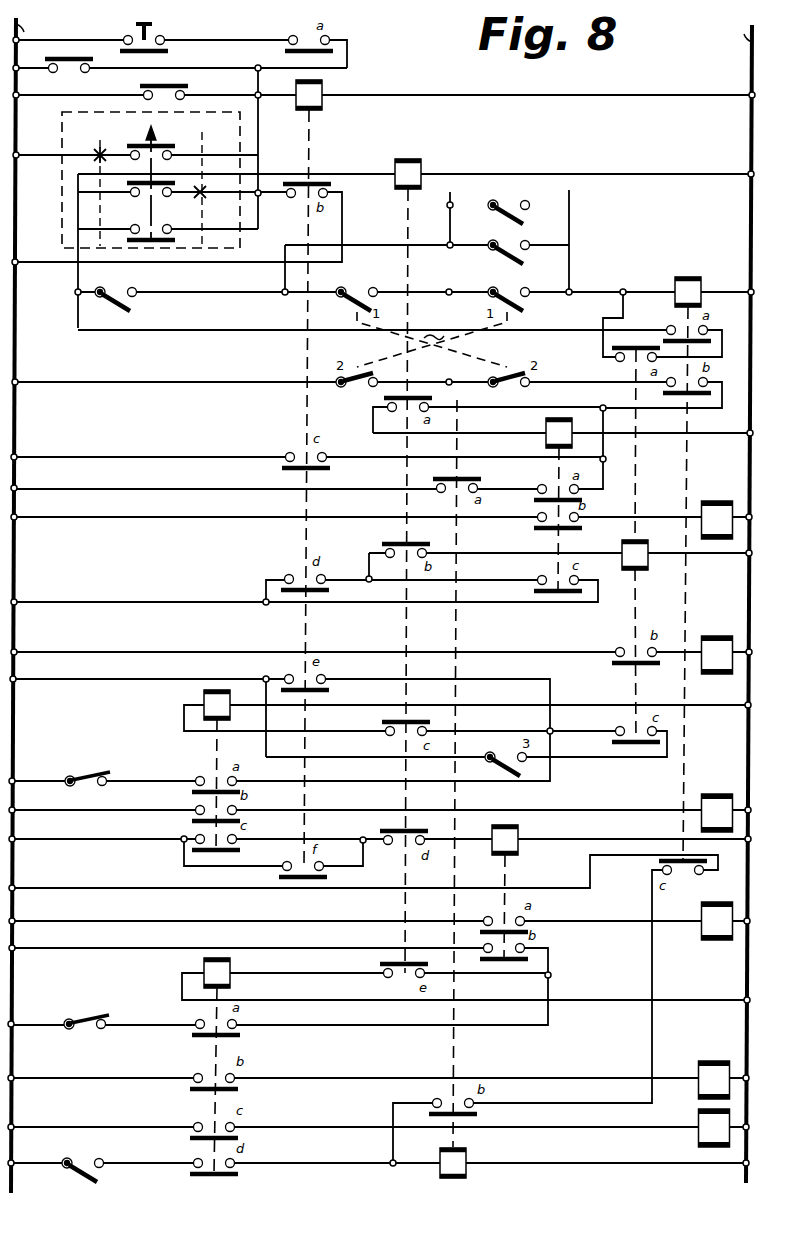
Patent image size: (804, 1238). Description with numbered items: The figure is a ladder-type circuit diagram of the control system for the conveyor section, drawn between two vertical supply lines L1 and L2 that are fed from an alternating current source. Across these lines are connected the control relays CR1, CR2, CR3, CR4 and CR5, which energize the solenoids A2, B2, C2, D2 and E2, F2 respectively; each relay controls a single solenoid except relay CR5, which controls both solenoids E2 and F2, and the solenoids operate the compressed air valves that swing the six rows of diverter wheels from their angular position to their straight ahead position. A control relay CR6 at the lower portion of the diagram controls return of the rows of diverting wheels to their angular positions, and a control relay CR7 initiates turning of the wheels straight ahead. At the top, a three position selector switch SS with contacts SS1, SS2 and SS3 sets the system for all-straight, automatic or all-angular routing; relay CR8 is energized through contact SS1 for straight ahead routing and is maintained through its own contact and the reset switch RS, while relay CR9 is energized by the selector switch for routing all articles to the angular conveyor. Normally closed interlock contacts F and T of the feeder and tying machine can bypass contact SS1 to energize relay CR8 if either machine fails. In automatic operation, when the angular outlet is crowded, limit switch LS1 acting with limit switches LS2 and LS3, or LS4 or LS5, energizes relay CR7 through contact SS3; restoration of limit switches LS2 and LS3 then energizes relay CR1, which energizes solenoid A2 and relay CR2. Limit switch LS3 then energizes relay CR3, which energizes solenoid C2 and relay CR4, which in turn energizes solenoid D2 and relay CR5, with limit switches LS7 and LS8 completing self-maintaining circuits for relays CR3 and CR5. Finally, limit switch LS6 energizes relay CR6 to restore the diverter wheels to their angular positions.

The line L1 is at (26, 598).
The line L2 is at (737, 595).
The reset switch RS is at (168, 28).
The interlock contact of the feeder F is at (74, 72).
The interlock contact of the tying machine T is at (166, 104).
The three position selector switch SS is at (60, 144).
The contact of selector switch SS1 is at (136, 157).
The contact of selector switch SS2 is at (140, 197).
The contact of selector switch SS3 is at (160, 220).
The control relay CR1 is at (552, 430).
The control relay CR2 is at (640, 560).
The control relay CR3 is at (209, 700).
The control relay CR4 is at (518, 837).
The control relay CR5 is at (225, 970).
The control relay CR6 is at (463, 1160).
The control relay CR7 is at (694, 286).
The control relay CR8 is at (319, 92).
The control relay CR9 is at (418, 172).
The limit switch LS1 is at (118, 289).
The limit switch LS2 is at (510, 288).
The limit switch LS3 is at (358, 289).
The limit switch LS4 is at (508, 243).
The limit switch LS5 is at (510, 203).
The limit switch LS6 is at (84, 1159).
The limit switch LS7 is at (89, 776).
The limit switch LS8 is at (97, 1018).
The solenoid A2 is at (717, 501).
The solenoid B2 is at (716, 637).
The solenoid C2 is at (716, 793).
The solenoid D2 is at (716, 903).
The solenoid E2 is at (713, 1063).
The solenoid F2 is at (698, 1134).